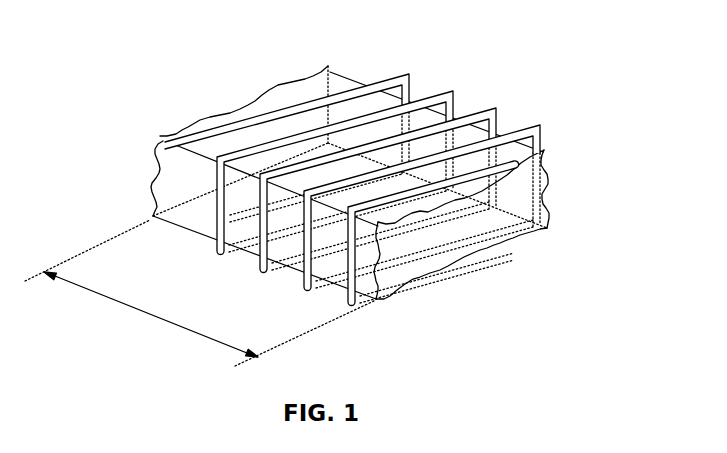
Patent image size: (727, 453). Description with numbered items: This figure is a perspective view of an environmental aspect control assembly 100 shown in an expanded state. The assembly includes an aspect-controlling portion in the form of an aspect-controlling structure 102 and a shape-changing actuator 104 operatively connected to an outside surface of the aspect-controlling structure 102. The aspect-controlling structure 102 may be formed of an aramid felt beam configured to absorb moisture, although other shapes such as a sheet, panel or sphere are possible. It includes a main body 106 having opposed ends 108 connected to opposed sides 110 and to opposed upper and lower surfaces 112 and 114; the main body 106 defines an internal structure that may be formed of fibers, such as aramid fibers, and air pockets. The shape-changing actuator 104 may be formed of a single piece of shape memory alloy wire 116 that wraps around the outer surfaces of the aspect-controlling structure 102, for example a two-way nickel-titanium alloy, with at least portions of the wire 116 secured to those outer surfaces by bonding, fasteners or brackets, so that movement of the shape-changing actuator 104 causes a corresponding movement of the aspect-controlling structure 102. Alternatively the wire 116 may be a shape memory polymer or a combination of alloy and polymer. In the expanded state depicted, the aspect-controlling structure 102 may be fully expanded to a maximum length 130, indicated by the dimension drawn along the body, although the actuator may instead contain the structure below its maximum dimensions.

The environmental aspect control assembly 100 is at (176, 99).
The aspect-controlling structure 102 is at (517, 195).
The shape-changing actuator 104 is at (494, 106).
The main body 106 is at (463, 250).
The opposed ends 108 is at (160, 136).
The opposed sides 110 is at (413, 93).
The upper surface 112 is at (333, 70).
The lower surface 114 is at (405, 296).
The shape memory alloy wire 116 is at (541, 129).
The maximum length 130 is at (148, 312).